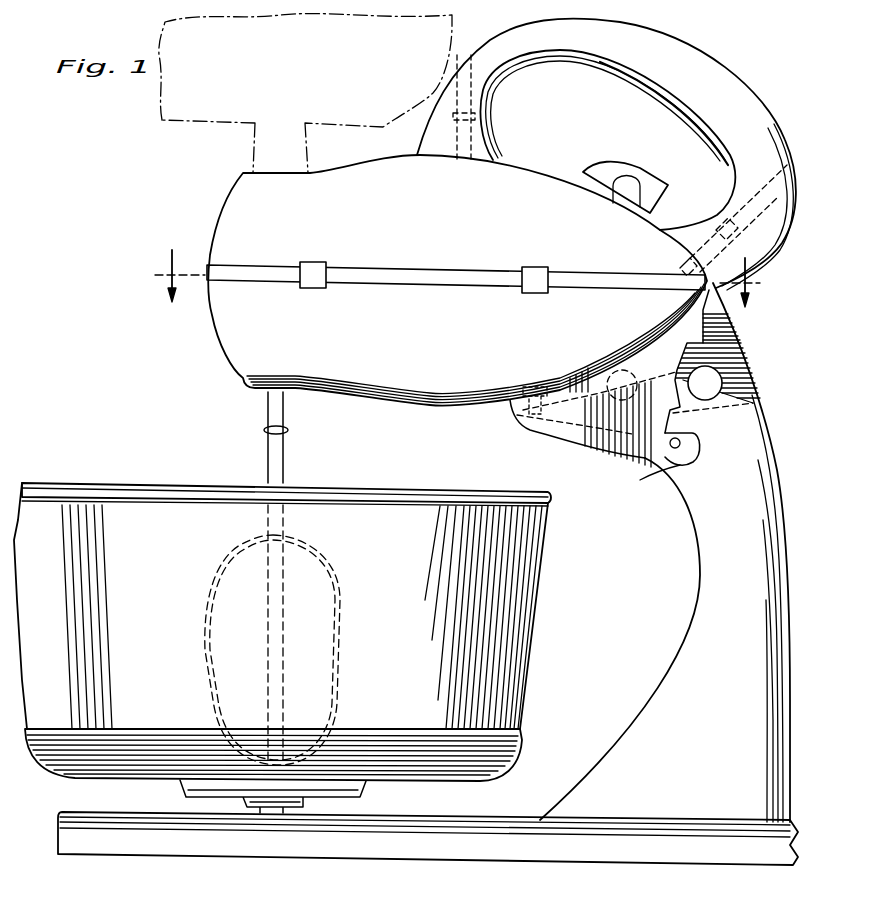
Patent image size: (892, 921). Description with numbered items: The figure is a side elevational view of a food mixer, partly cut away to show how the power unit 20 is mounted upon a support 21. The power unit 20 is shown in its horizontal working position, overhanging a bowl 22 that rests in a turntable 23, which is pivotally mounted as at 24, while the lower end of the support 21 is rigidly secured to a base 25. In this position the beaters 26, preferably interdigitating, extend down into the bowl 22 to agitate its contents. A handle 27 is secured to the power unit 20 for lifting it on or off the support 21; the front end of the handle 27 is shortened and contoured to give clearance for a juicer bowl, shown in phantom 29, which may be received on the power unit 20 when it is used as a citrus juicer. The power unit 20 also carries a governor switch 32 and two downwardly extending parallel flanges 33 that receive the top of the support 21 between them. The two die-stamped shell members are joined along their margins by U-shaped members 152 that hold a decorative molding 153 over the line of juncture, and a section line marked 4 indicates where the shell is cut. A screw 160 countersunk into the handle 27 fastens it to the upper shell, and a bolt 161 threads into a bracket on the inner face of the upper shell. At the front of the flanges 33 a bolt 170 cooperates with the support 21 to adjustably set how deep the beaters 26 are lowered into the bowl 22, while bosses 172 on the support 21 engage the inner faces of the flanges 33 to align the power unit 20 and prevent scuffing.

The power unit 20 is at (336, 160).
The support 21 is at (718, 580).
The bowl 22 is at (522, 628).
The turntable 23 is at (522, 755).
The pivot mounting of turntable 24 is at (262, 815).
The base 25 is at (410, 848).
The beaters 26 is at (266, 462).
The handle 27 is at (675, 68).
The juicer bowl 29 is at (190, 125).
The governor switch 32 is at (610, 175).
The flanges 33 is at (610, 440).
The section line 4- 4 is at (455, 278).
The U-shaped members 152 is at (314, 267).
The decorative molding 153 is at (423, 273).
The screw 160 is at (488, 138).
The bolt 161 is at (707, 238).
The bolt 170 is at (520, 418).
The bosses 172 is at (713, 380).